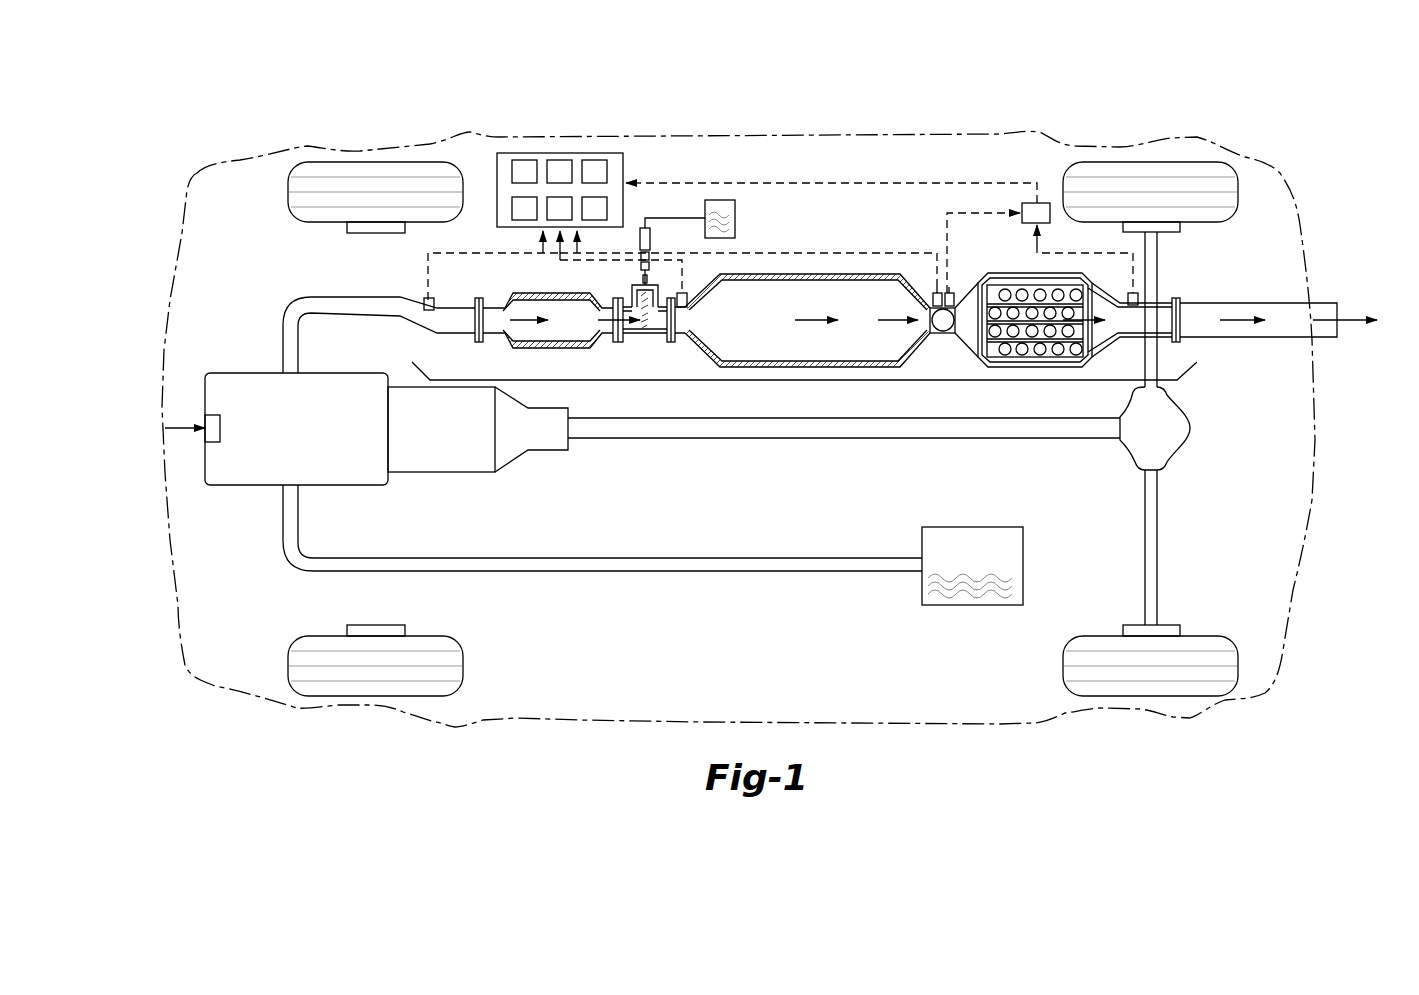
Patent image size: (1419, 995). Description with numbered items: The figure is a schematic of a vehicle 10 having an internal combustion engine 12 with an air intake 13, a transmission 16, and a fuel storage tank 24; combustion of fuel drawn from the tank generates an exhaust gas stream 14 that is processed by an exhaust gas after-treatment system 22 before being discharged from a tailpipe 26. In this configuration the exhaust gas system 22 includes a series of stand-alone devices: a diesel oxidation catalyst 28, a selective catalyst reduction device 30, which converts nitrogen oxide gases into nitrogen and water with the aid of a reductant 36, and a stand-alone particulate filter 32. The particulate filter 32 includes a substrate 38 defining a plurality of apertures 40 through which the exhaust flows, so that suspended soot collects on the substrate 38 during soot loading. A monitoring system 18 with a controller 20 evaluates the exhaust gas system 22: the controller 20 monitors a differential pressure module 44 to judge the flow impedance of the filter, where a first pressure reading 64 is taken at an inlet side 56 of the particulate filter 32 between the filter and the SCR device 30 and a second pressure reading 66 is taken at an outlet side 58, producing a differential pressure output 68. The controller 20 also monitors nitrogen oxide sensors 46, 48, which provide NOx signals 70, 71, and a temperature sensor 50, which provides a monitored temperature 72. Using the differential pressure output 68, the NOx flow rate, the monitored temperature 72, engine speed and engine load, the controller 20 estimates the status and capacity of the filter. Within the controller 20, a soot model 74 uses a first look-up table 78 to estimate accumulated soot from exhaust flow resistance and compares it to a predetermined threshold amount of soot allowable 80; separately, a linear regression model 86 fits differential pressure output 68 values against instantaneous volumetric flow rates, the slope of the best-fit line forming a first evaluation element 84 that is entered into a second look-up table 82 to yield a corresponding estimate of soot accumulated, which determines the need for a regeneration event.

The vehicle 10 is at (925, 78).
The internal combustion engine 12 is at (283, 435).
The air intake 13 is at (205, 420).
The exhaust gas stream 14 is at (513, 313).
The transmission 16 is at (428, 435).
The monitoring system 18 is at (780, 172).
The controller 20 is at (583, 180).
The exhaust gas after-treatment system 22 is at (797, 382).
The fuel storage tank 24 is at (970, 527).
The tailpipe 26 is at (1325, 310).
The diesel oxidation catalyst 28 is at (543, 348).
The selective catalyst reduction device 30 is at (910, 365).
The stand-alone particulate filter 32 is at (1052, 327).
The reductant 36 is at (737, 218).
The substrate 38 is at (1032, 290).
The apertures 40 is at (1022, 295).
The differential pressure module 44 is at (1036, 213).
The nitrogen oxide sensor 46 is at (690, 300).
The nitrogen oxide sensor 48 is at (928, 303).
The temperature sensor 50 is at (420, 305).
The inlet side 56 is at (969, 330).
The outlet side 58 is at (1097, 330).
The first pressure reading 64 is at (977, 212).
The second pressure reading 66 is at (1100, 253).
The differential pressure output 68 is at (980, 183).
The NOx signal 70 is at (607, 260).
The NOx signal 71 is at (890, 253).
The monitored temperature 72 is at (490, 255).
The soot model 74 is at (525, 170).
The first look-up table 78 is at (595, 170).
The predetermined threshold amount of soot allowable 80 is at (560, 170).
The second look-up table 82 is at (517, 215).
The first evaluation element 84 is at (565, 215).
The linear regression model 86 is at (600, 208).